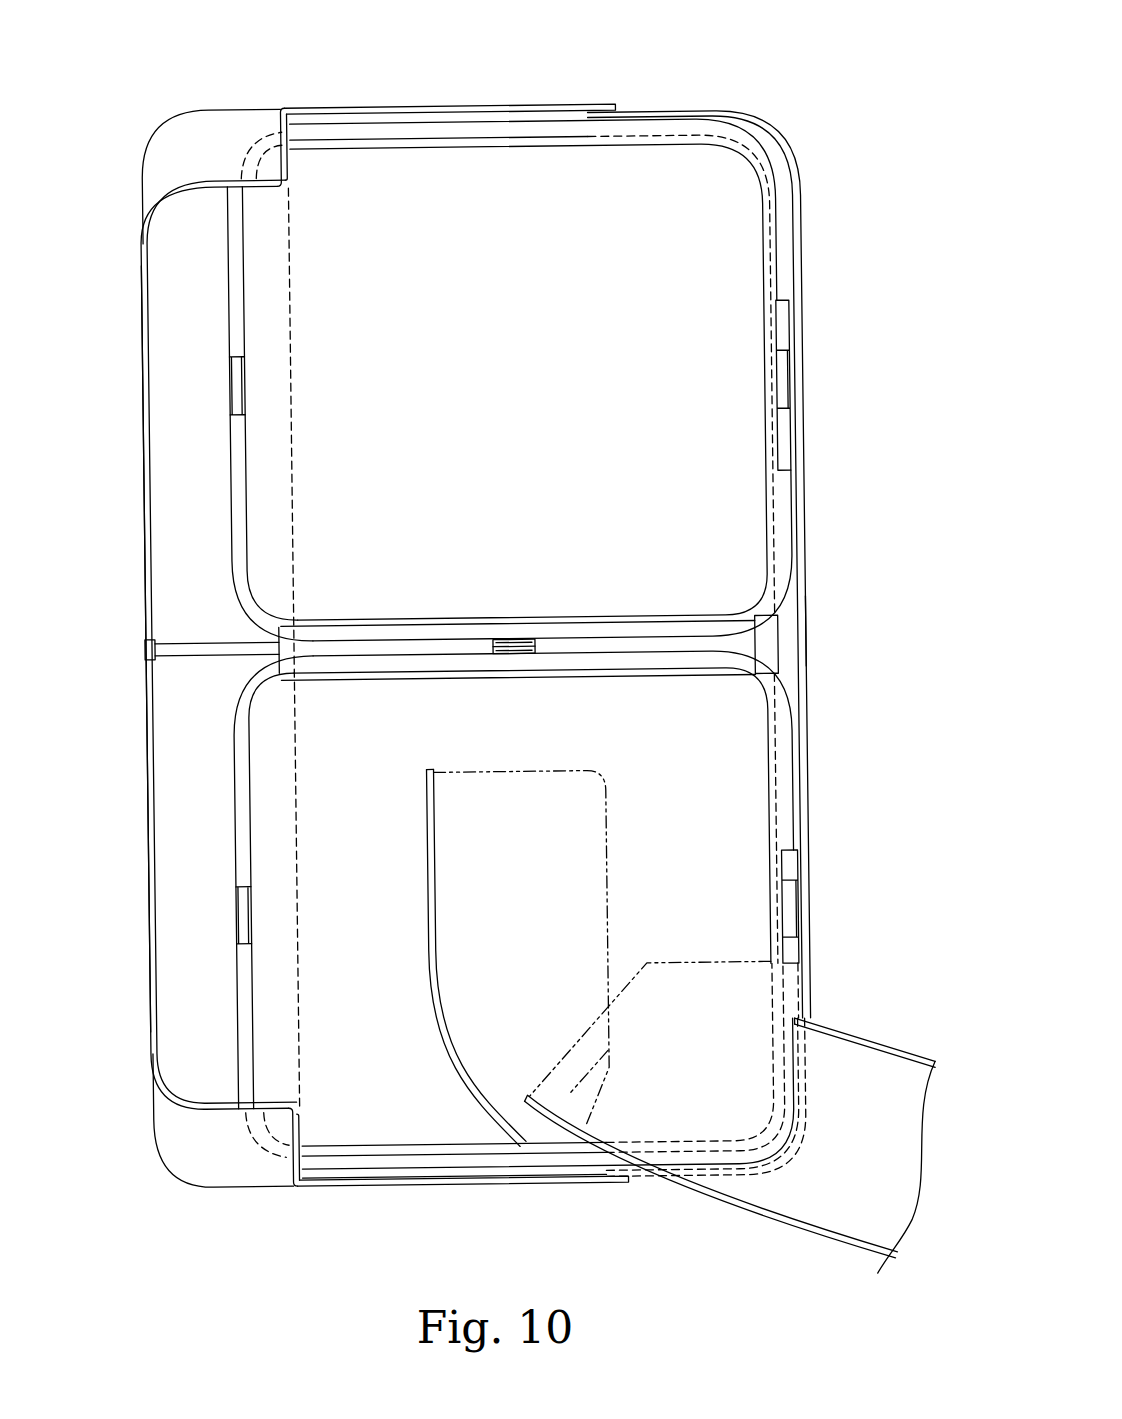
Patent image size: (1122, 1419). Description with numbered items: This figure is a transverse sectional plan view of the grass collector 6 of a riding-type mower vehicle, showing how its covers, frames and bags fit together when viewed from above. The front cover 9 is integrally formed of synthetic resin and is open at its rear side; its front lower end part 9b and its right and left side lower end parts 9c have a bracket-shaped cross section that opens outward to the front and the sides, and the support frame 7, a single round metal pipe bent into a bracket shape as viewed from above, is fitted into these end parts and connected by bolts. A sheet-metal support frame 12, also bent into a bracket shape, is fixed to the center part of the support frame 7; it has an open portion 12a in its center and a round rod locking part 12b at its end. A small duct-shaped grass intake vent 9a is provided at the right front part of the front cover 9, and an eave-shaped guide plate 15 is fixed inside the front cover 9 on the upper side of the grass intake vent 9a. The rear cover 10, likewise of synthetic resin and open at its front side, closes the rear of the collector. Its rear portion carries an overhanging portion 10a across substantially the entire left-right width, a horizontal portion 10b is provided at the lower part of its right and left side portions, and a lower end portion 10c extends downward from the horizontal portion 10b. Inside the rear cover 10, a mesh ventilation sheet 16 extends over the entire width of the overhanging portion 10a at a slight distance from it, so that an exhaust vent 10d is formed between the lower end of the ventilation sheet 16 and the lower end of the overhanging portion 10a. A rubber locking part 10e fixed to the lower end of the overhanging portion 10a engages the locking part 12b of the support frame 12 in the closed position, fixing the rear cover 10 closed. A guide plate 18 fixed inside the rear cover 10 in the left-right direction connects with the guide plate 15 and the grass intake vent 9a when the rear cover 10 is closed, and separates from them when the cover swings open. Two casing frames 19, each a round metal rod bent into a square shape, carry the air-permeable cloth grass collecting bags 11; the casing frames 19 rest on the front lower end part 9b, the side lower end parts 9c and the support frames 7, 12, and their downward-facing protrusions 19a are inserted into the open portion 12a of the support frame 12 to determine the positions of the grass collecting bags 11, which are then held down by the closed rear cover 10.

The grass collector 6 is at (851, 230).
The support frame 7 is at (470, 151).
The front cover 9 is at (786, 137).
The grass intake vent 9a is at (858, 1055).
The front lower end part 9b is at (814, 636).
The right and left side lower end parts 9c is at (626, 153).
The rear cover 10 is at (494, 105).
The overhanging portion 10a is at (146, 476).
The horizontal portion 10b is at (216, 142).
The lower end portion 10c is at (243, 103).
The exhaust vent 10d is at (189, 358).
The locking part 10e is at (149, 659).
The grass collecting bags 11 is at (235, 480).
The support frame 12 is at (614, 618).
The open portion 12a is at (493, 647).
The locking part 12b is at (188, 640).
The guide plate 15 is at (561, 1041).
The ventilation sheet 16 is at (299, 290).
The guide plate 18 is at (425, 885).
The casing frames 19 is at (243, 378).
The protrusion 19a is at (517, 640).